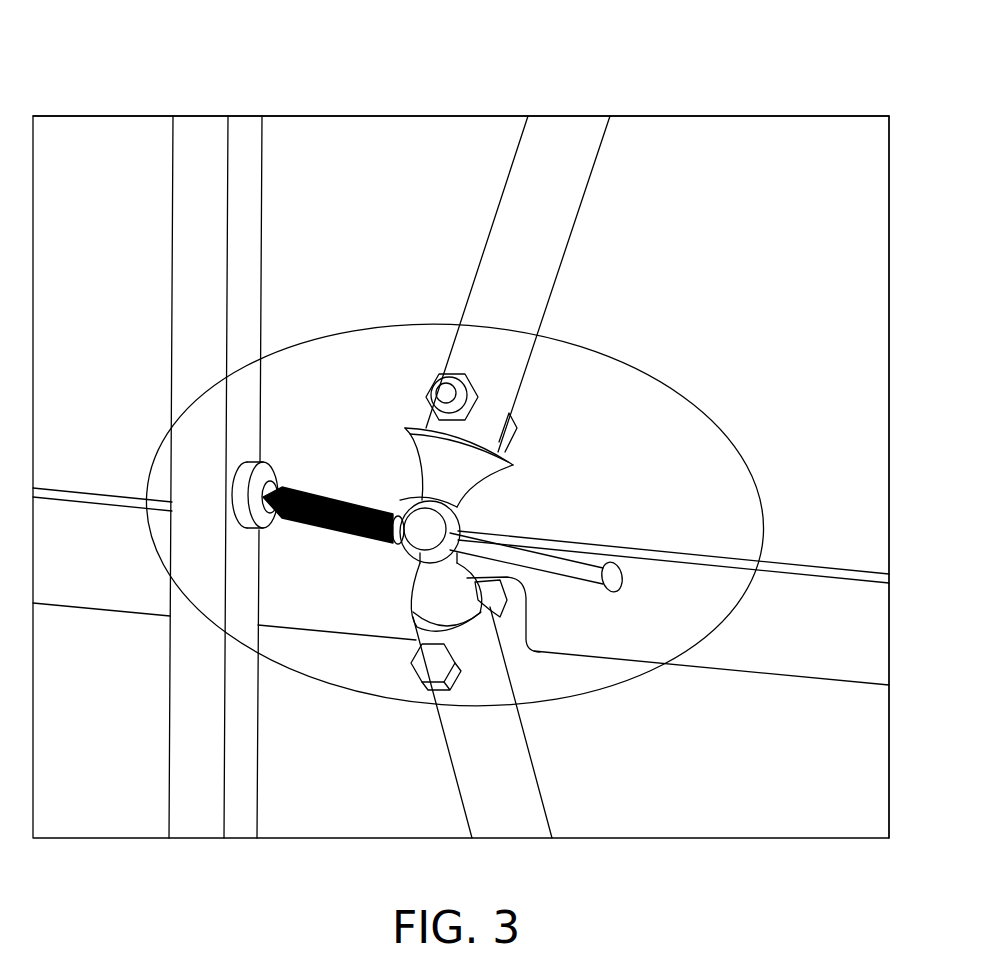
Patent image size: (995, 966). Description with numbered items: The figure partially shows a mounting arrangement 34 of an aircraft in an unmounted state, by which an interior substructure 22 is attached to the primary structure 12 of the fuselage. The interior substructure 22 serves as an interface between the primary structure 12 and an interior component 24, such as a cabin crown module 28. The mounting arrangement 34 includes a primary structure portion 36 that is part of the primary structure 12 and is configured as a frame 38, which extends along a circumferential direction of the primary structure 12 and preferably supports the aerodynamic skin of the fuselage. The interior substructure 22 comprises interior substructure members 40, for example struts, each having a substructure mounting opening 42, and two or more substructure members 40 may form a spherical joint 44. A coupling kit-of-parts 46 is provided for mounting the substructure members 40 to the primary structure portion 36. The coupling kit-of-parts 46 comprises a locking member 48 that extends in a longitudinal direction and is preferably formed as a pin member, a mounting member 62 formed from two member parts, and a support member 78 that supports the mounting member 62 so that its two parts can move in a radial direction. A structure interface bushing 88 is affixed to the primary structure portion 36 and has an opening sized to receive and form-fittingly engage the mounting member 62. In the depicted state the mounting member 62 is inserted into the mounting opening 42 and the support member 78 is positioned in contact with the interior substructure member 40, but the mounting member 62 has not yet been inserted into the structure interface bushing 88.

The primary structure 12 is at (202, 147).
The interior substructure 22 is at (547, 425).
The interior component 24 is at (708, 147).
The cabin crown module 28 is at (820, 147).
The mounting arrangement 34 is at (140, 225).
The primary structure portion 36 is at (178, 654).
The frame 38 is at (197, 750).
The interior substructure member 40 is at (555, 205).
The substructure mounting opening 42 is at (391, 455).
The spherical joint 44 is at (389, 625).
The coupling kit-of-parts 46 is at (432, 378).
The locking member 48 is at (568, 567).
The mounting member 62 is at (318, 492).
The support member 78 is at (427, 532).
The structure interface bushing 88 is at (240, 498).